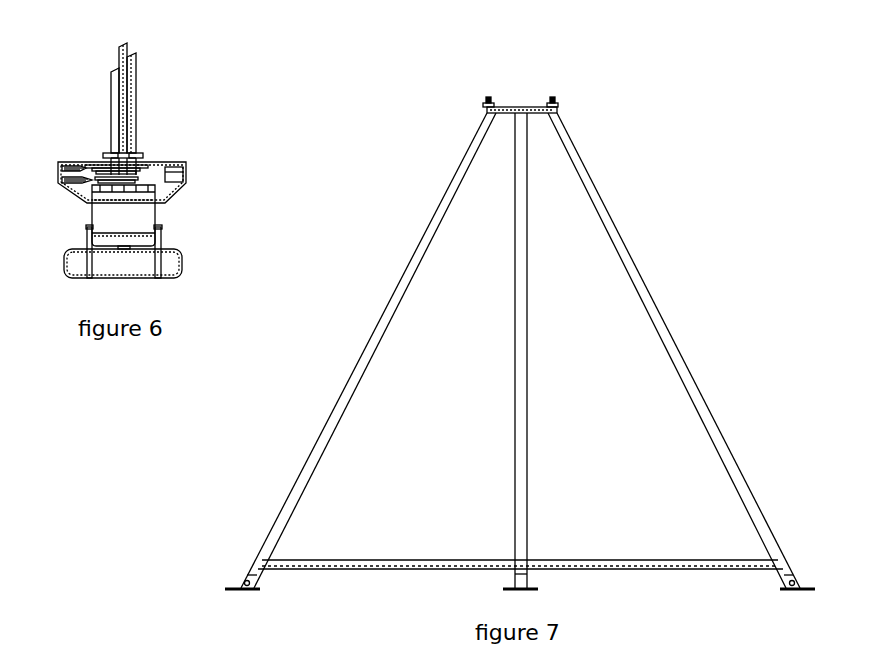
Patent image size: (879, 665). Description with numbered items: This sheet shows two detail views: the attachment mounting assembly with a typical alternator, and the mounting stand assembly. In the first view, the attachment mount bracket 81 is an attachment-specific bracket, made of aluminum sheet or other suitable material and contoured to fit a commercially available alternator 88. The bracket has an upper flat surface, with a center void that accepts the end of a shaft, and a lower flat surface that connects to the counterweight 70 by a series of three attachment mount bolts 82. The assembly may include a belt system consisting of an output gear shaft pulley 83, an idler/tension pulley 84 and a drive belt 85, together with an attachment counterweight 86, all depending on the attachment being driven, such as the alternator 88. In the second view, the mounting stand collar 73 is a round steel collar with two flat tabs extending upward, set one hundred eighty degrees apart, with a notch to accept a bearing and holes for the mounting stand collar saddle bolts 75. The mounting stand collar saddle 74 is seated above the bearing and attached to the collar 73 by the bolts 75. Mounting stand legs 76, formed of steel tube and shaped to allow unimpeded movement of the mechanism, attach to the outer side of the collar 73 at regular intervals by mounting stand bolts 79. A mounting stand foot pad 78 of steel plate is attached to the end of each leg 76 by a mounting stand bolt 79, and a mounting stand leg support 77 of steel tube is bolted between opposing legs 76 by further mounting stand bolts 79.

In FIG. 6, the counterweight 70 is at (150, 263).
In FIG. 6, the attachment mount bracket 81 is at (178, 193).
In FIG. 6, the attachment mount bolt 82 is at (162, 237).
In FIG. 6, the output gear shaft pulley 83 is at (107, 168).
In FIG. 6, the idler/tension pulley 84 is at (87, 173).
In FIG. 6, the drive belt 85 is at (97, 182).
In FIG. 6, the attachment counterweight 86 is at (173, 175).
In FIG. 6, the alternator 88 is at (112, 214).
In FIG. 7, the mounting stand collar 73 is at (528, 110).
In FIG. 7, the mounting stand collar saddle 74 is at (488, 98).
In FIG. 7, the mounting stand collar saddle bolt 75 is at (487, 103).
In FIG. 7, the mounting stand leg 76 is at (661, 323).
In FIG. 7, the mounting stand leg support 77 is at (466, 565).
In FIG. 7, the mounting stand foot pad 78 is at (248, 576).
In FIG. 7, the mounting stand bolt 79 is at (485, 106).